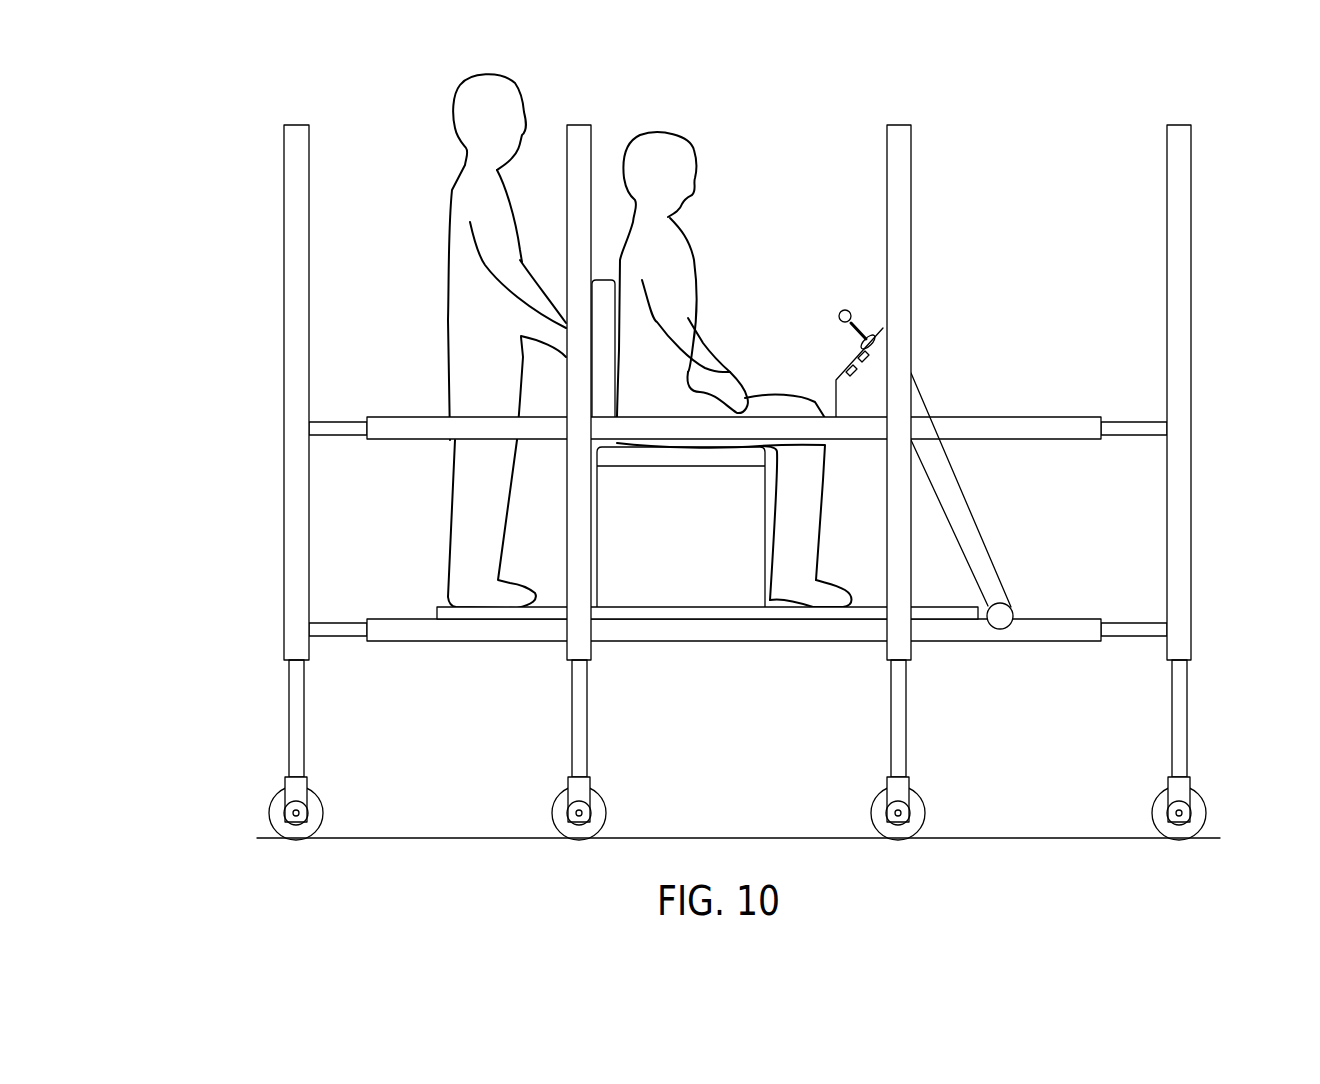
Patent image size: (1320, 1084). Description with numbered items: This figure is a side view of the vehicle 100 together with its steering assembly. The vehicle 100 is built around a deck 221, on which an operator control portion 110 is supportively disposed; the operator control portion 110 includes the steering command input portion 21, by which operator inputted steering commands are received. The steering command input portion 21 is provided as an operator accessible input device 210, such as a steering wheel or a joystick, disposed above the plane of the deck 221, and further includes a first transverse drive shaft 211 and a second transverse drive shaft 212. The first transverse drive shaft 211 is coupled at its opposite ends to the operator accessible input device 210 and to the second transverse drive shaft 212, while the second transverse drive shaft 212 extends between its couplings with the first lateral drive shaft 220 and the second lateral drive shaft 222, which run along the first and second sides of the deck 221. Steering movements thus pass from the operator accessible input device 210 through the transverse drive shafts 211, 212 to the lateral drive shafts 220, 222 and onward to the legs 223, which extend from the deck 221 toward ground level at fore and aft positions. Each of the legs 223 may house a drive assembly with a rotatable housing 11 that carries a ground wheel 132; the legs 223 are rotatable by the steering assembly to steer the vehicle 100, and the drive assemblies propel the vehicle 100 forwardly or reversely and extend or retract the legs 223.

The vehicle 100 is at (722, 457).
The rotatable housing 11 is at (297, 717).
The ground wheel 132 is at (318, 808).
The legs 223 is at (298, 652).
The deck 221 is at (437, 612).
The first lateral drive shaft 220 is at (738, 529).
The second lateral drive shaft 222 is at (1087, 620).
The steering command input portion 21 is at (825, 322).
The operator control portion 110 is at (825, 322).
The operator accessible input device 210 is at (858, 322).
The first transverse drive shaft 211 is at (967, 532).
The second transverse drive shaft 212 is at (1010, 611).